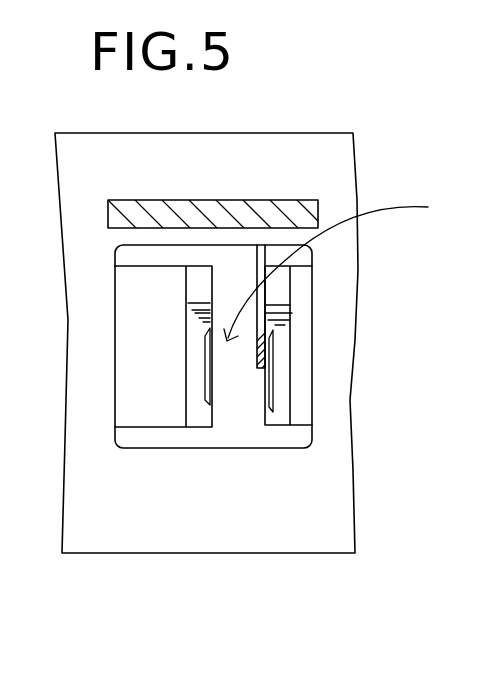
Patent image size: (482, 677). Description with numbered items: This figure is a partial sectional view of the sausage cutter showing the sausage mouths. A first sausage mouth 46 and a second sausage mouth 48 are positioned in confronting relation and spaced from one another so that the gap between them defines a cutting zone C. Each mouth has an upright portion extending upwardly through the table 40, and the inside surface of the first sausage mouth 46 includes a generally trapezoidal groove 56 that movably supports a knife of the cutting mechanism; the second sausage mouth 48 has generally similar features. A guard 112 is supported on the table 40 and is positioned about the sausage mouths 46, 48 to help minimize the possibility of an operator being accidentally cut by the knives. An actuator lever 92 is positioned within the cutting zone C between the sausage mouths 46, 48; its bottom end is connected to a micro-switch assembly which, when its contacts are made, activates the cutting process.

The table 40 is at (345, 517).
The guard 112 is at (245, 203).
The first sausage mouth 46 is at (198, 288).
The second sausage mouth 48 is at (285, 292).
The actuator lever 92 is at (263, 313).
The trapezoidal groove 56 is at (270, 398).
The cutting zone C is at (336, 268).